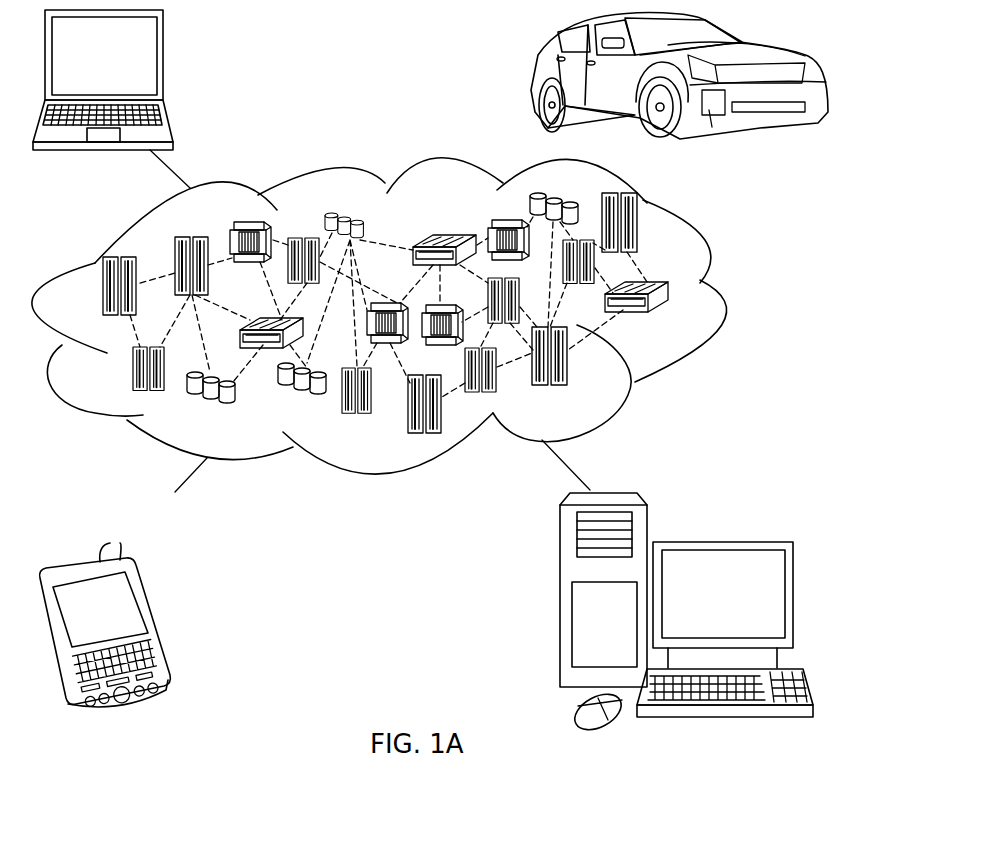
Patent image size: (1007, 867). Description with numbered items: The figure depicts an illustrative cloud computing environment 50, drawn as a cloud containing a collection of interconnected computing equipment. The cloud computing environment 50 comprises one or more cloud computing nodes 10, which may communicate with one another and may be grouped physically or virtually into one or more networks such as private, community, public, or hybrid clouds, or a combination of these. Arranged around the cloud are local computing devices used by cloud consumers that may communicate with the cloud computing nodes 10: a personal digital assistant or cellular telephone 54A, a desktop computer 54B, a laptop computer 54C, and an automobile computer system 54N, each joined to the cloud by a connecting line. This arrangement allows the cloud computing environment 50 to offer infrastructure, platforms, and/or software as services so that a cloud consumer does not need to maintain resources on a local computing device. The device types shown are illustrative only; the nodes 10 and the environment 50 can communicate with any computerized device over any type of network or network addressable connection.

The cloud computing node 10 is at (672, 320).
The cloud computing environment 50 is at (723, 293).
The personal digital assistant or cellular telephone 54A is at (157, 613).
The desktop computer 54B is at (720, 542).
The laptop computer 54C is at (160, 62).
The automobile computer system 54N is at (535, 75).